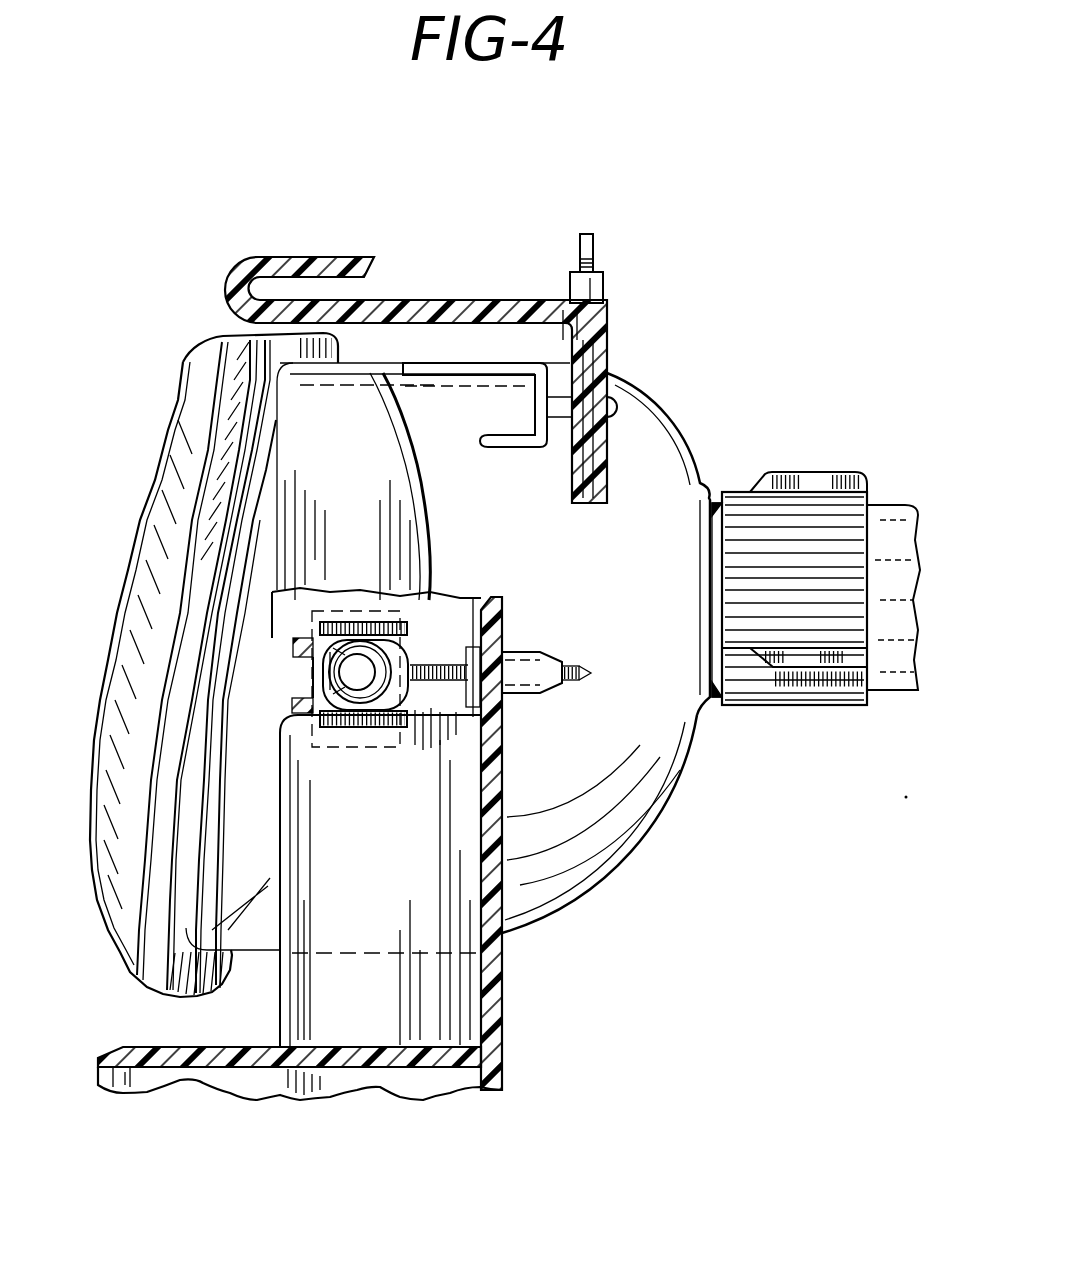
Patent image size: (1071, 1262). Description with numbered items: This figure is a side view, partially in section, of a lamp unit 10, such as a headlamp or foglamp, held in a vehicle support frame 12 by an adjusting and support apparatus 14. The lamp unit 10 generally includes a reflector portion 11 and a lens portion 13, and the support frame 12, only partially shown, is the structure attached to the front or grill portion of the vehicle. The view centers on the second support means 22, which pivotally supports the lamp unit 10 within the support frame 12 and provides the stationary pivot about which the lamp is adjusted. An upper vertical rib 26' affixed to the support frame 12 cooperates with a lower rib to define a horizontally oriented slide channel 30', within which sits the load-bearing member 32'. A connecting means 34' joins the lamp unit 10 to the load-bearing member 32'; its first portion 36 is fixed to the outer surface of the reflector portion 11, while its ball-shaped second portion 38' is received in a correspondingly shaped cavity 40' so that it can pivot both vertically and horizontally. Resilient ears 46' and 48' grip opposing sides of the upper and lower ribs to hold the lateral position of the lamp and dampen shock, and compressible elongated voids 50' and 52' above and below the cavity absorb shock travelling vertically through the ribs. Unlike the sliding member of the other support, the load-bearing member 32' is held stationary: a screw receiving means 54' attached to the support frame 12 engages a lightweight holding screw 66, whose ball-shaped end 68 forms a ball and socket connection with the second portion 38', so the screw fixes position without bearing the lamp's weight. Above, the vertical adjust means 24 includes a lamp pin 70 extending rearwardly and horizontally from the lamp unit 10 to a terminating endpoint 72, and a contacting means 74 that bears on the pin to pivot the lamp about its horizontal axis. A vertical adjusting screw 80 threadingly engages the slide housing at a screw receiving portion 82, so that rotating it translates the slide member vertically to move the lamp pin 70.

The lamp unit 10 is at (176, 358).
The reflector portion 11 is at (305, 428).
The support frame 12 is at (432, 300).
The lens portion 13 is at (172, 417).
The adjusting and support apparatus 14 is at (688, 140).
The second support means 22 is at (618, 765).
The vertical adjust means 24 is at (652, 328).
The upper vertical rib 26' is at (420, 651).
The horizontally oriented slide channel 30' is at (510, 632).
The load-bearing member 32' is at (422, 543).
The connecting means 34' is at (171, 598).
The first portion 36 is at (280, 710).
The second portion 38' is at (399, 736).
The cavity 40' is at (186, 646).
The means for resiliently engaging upper vertical rib 46' is at (356, 602).
The means for resiliently engaging lower vertical rib 48' is at (365, 743).
The shock absorbing means 50' is at (348, 550).
The shock absorbing means 52' is at (349, 759).
The screw receiving means 54' is at (584, 649).
The holding screw 66 is at (592, 680).
The end of holding screw 68 is at (428, 699).
The lamp pin 70 is at (547, 400).
The terminating endpoint 72 is at (622, 400).
The contacting means 74 is at (640, 435).
The vertical adjusting screw 80 is at (593, 242).
The screw receiving portion 82 is at (606, 287).